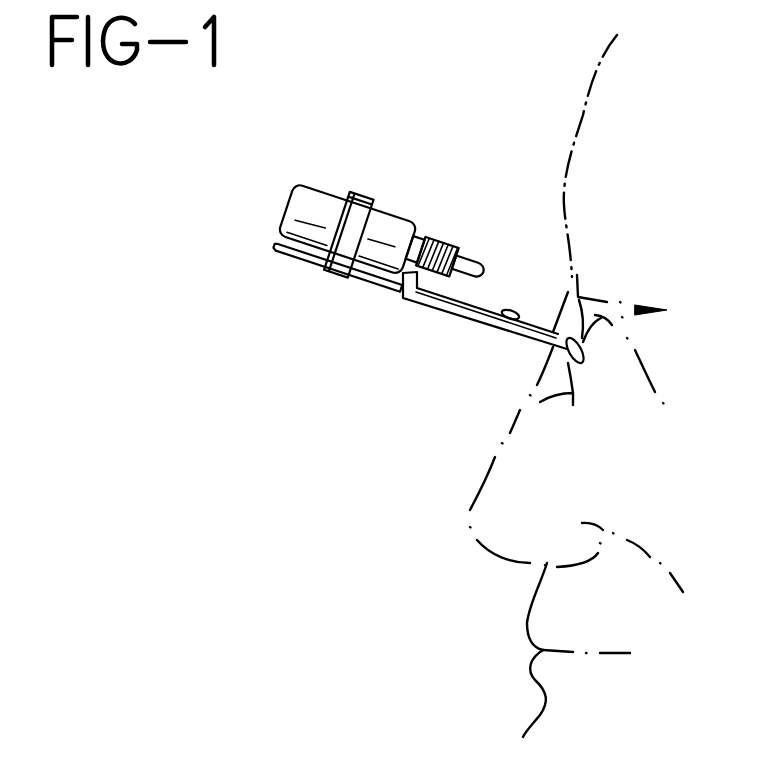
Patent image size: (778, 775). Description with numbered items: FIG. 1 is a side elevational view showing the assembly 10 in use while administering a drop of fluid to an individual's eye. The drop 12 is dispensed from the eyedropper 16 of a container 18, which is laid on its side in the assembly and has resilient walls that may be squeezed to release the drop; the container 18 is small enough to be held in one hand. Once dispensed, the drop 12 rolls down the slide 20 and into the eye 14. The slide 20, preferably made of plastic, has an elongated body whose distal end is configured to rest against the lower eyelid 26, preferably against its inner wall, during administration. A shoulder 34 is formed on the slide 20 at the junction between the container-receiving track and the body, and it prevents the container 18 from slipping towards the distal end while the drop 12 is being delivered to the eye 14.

The assembly 10 is at (200, 282).
The drop 12 is at (511, 306).
The eye 14 is at (675, 409).
The eyedropper 16 is at (476, 250).
The container 18 is at (303, 190).
The slide 20 is at (447, 328).
The lower eyelid 26 is at (478, 452).
The shoulder 34 is at (387, 278).